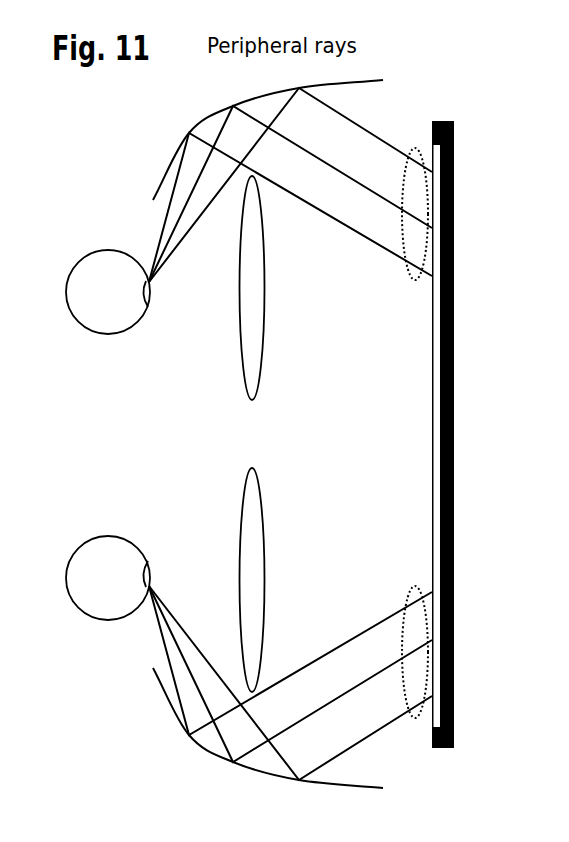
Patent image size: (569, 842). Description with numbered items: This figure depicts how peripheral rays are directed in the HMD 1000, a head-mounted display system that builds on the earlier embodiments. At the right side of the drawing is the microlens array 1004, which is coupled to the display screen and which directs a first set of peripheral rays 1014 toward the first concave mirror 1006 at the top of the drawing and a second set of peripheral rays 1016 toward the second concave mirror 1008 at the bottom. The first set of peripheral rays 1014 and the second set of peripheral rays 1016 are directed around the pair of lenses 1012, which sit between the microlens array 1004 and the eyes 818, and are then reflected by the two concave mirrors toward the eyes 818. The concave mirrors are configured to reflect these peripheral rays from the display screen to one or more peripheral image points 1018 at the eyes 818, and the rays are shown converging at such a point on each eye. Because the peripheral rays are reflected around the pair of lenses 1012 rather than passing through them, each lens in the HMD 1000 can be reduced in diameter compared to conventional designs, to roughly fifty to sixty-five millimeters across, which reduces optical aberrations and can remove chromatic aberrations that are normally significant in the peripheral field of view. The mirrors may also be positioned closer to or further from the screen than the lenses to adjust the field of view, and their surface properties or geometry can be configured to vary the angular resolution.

The HMD 1000 is at (498, 156).
The microlens array 1004 is at (432, 434).
The first concave mirror 1006 is at (191, 134).
The second concave mirror 1008 is at (158, 693).
The pair of lenses 1012 is at (240, 392).
The first set of peripheral rays 1014 is at (412, 150).
The second set of peripheral rays 1016 is at (410, 592).
The eyes 818 is at (128, 284).
The peripheral image points 1018 is at (150, 287).